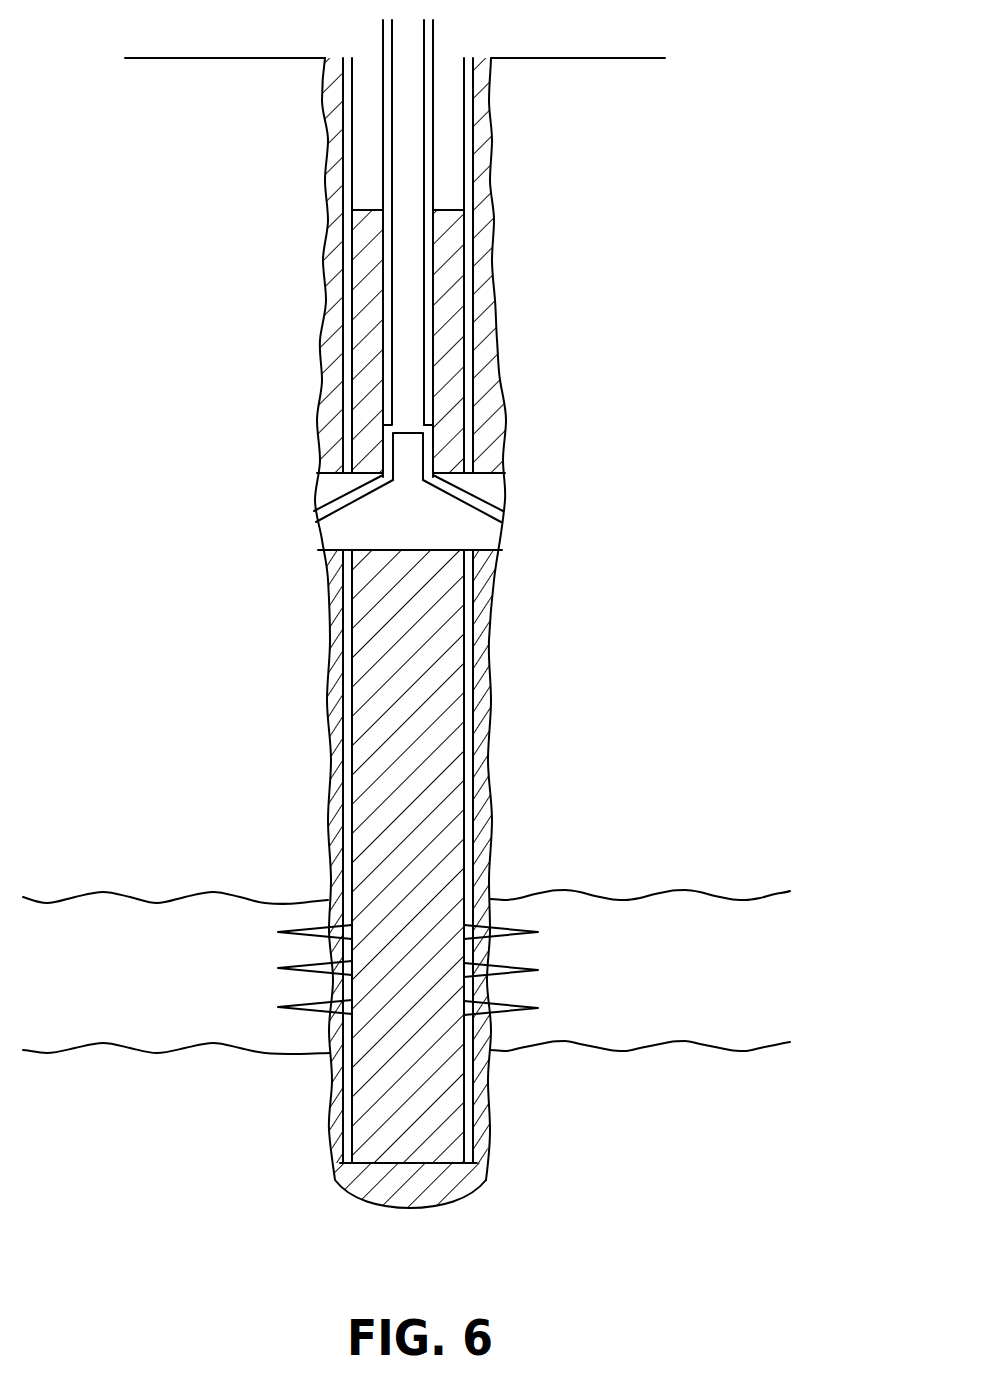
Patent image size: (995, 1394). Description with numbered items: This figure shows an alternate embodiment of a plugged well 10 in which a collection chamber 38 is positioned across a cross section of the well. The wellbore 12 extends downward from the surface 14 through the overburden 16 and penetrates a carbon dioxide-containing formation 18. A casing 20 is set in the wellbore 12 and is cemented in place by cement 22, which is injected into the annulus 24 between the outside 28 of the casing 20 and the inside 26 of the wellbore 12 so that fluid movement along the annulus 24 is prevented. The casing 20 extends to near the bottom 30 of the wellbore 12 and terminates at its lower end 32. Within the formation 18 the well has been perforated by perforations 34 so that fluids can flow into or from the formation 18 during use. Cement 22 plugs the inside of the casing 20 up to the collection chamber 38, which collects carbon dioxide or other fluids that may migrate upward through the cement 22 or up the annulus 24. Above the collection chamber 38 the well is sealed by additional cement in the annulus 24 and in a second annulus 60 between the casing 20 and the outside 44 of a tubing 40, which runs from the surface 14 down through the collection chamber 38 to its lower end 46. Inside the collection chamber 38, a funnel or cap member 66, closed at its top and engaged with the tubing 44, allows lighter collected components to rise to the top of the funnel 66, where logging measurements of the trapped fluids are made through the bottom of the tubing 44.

The well 10 is at (616, 160).
The wellbore 12 is at (495, 298).
The surface 14 is at (573, 58).
The overburden 16 is at (708, 489).
The carbon dioxide-containing formation 18 is at (746, 977).
The casing 20 is at (473, 410).
The cement 22 is at (415, 660).
The annulus 24 is at (485, 660).
The inside of wellbore 26 is at (485, 697).
The outside of casing 28 is at (485, 838).
The bottom of wellbore 30 is at (430, 1207).
The lower end of casing 32 is at (472, 1160).
The perforations 34 is at (278, 1007).
The collection chamber 38 is at (447, 527).
The tubing 40 is at (428, 135).
The outside of tubing 44 is at (433, 272).
The lower end of tubing 46 is at (402, 422).
The second annulus 60 is at (368, 258).
The funnel or cap member 66 is at (515, 490).